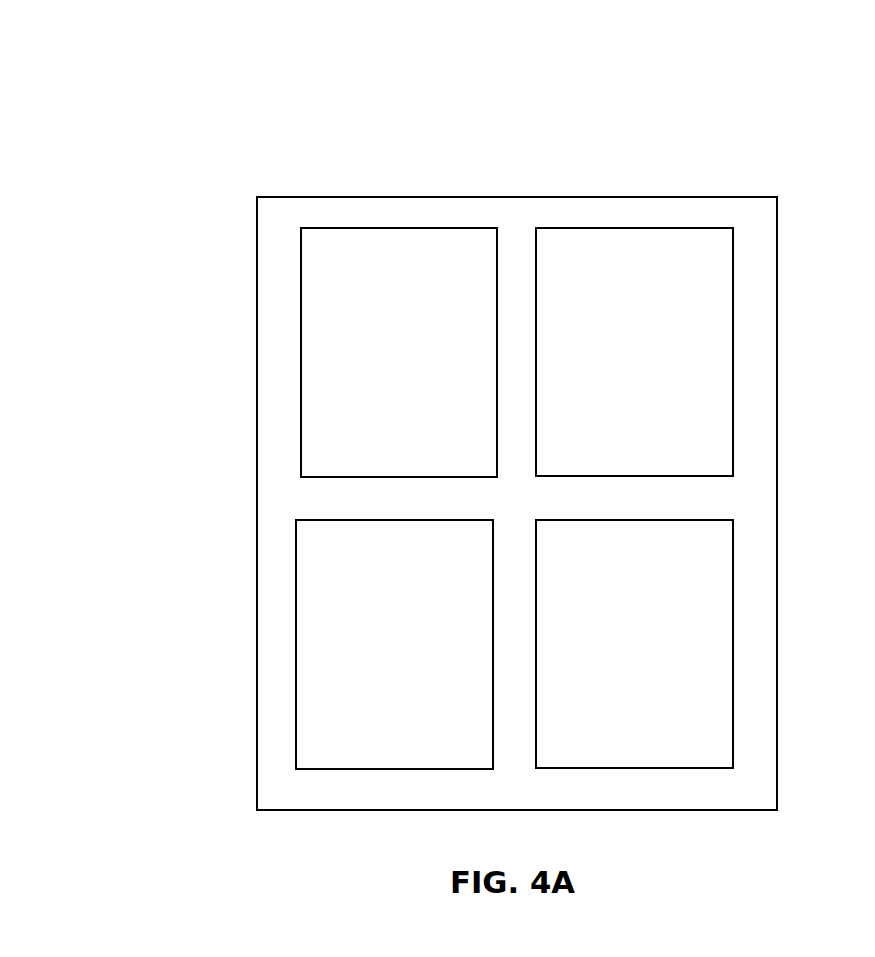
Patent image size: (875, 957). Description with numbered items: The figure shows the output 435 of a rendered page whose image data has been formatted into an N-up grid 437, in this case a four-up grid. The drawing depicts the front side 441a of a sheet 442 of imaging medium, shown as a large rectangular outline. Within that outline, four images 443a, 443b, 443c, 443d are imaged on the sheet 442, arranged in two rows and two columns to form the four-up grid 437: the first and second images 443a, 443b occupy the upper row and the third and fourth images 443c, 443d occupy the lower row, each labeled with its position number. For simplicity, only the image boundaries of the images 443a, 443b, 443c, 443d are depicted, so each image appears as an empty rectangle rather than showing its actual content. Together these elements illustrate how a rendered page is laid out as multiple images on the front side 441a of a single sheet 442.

The output 435 is at (255, 83).
The N-up grid 437 is at (278, 215).
The sheet 442 is at (398, 165).
The front side 441a is at (578, 215).
The image 443a is at (317, 347).
The image 443b is at (705, 367).
The image 443c is at (318, 613).
The image 443d is at (702, 633).